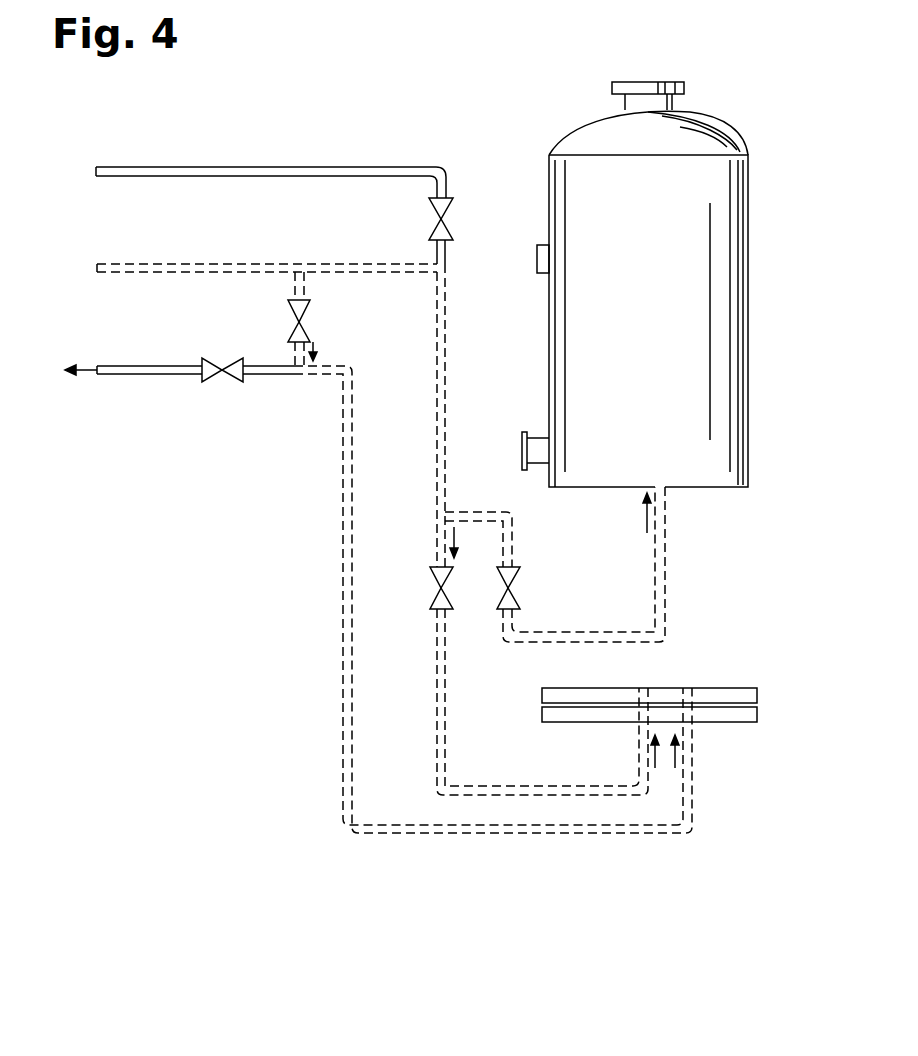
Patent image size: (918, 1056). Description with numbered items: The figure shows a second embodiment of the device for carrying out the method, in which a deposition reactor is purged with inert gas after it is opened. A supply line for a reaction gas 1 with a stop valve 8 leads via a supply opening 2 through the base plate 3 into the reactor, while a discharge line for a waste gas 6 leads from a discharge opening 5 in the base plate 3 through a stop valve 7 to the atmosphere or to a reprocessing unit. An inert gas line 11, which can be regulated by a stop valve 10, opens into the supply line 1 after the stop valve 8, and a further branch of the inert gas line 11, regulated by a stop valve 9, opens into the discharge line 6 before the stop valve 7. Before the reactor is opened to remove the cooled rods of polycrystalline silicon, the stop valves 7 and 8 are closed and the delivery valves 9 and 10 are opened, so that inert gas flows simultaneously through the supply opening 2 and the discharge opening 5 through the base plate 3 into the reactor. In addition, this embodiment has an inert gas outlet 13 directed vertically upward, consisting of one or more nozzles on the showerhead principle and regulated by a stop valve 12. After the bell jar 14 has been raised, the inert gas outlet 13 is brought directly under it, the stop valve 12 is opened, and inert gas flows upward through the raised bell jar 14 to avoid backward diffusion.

The supply line for a reaction gas 1 is at (132, 168).
The supply opening 2 is at (636, 713).
The base plate 3 is at (742, 695).
The discharge opening 5 is at (690, 713).
The discharge line for a waste gas 6 is at (135, 366).
The stop valve 7 is at (222, 377).
The stop valve 8 is at (445, 219).
The stop valve 9 is at (300, 322).
The stop valve 10 is at (440, 588).
The inert gas line 11 is at (133, 266).
The stop valve 12 is at (509, 588).
The inert gas outlet 13 is at (666, 492).
The bell jar 14 is at (700, 300).